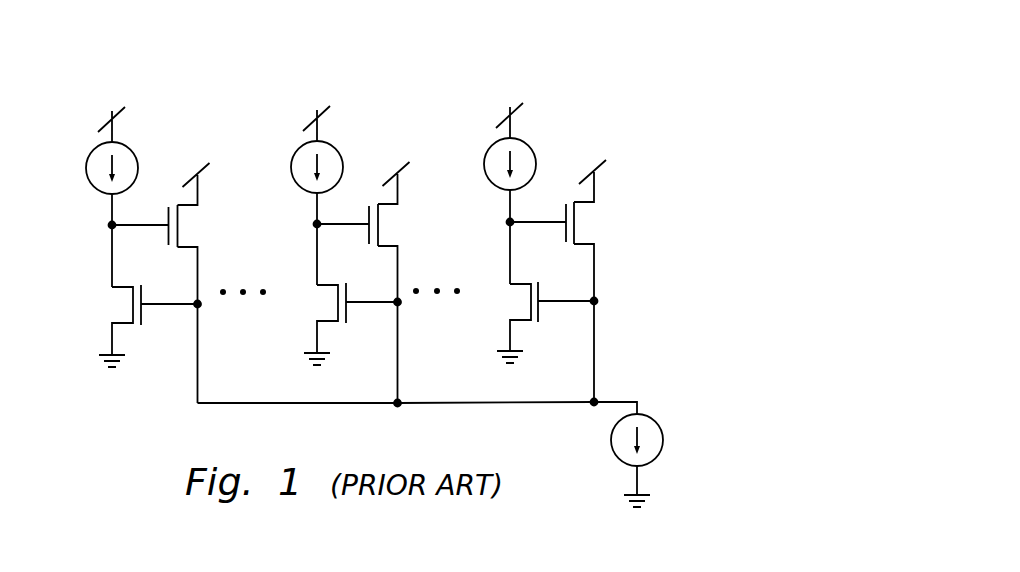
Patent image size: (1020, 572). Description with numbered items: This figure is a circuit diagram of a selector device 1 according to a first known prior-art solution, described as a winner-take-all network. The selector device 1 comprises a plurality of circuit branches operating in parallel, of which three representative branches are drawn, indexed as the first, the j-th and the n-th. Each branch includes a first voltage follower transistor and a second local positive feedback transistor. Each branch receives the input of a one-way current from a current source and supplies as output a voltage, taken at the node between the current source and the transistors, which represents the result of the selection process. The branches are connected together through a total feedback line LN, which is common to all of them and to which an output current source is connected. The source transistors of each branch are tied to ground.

The prior art current mirror circuit 1 is at (284, 56).
The common line LN is at (410, 405).